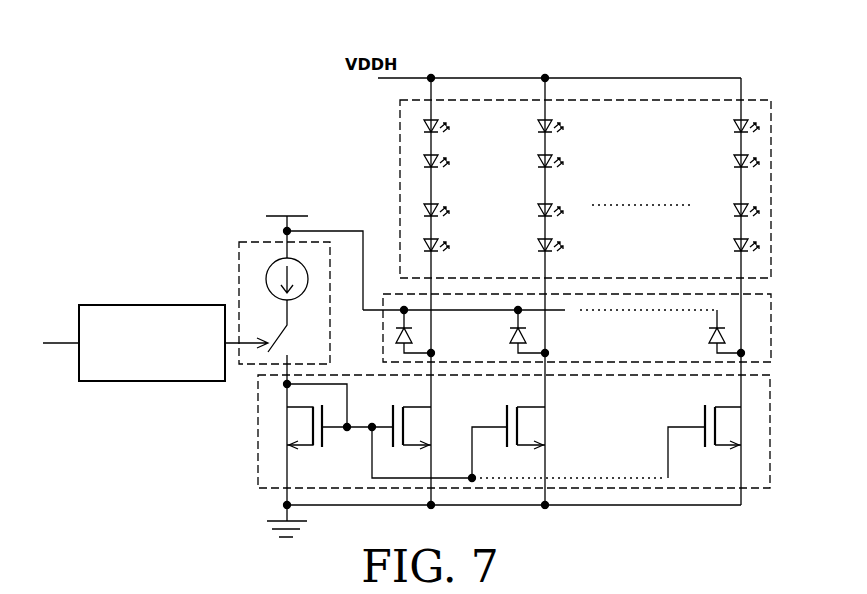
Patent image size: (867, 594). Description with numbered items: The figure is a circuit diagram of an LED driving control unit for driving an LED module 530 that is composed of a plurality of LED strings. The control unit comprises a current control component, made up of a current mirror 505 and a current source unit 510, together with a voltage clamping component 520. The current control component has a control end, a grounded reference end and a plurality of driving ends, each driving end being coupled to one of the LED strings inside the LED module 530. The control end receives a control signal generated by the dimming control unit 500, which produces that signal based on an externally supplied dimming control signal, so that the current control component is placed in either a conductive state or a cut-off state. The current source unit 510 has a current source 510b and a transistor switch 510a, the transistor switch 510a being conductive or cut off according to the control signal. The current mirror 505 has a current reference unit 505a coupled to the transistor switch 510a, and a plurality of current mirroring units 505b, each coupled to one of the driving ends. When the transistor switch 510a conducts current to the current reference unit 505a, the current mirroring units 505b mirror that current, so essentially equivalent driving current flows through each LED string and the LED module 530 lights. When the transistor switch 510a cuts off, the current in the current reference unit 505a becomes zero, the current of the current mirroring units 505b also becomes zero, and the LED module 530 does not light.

The dimming control unit 500 is at (157, 378).
The current mirror 505 is at (258, 432).
The current reference unit 505a is at (326, 437).
The current mirroring units 505b is at (432, 433).
The current source unit 510 is at (239, 290).
The transistor switch 510a is at (290, 336).
The current source 510b is at (267, 268).
The voltage clamping component 520 is at (771, 312).
The LED module 530 is at (400, 176).